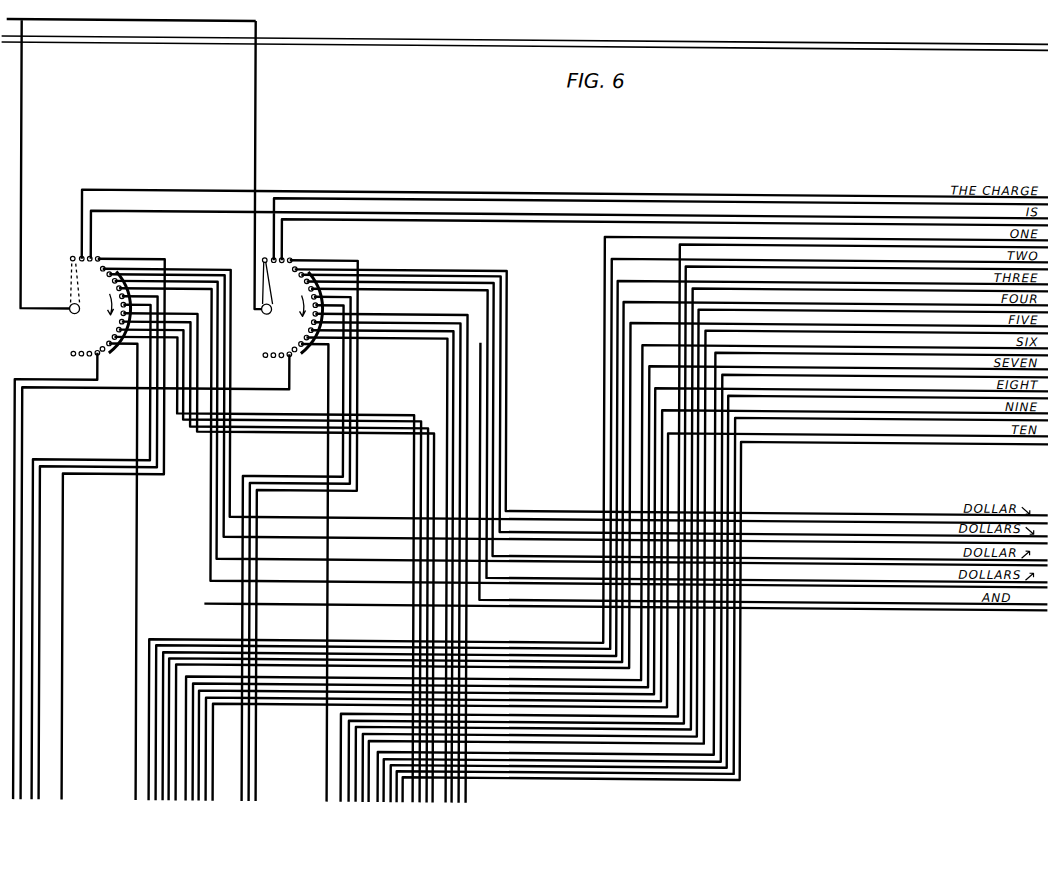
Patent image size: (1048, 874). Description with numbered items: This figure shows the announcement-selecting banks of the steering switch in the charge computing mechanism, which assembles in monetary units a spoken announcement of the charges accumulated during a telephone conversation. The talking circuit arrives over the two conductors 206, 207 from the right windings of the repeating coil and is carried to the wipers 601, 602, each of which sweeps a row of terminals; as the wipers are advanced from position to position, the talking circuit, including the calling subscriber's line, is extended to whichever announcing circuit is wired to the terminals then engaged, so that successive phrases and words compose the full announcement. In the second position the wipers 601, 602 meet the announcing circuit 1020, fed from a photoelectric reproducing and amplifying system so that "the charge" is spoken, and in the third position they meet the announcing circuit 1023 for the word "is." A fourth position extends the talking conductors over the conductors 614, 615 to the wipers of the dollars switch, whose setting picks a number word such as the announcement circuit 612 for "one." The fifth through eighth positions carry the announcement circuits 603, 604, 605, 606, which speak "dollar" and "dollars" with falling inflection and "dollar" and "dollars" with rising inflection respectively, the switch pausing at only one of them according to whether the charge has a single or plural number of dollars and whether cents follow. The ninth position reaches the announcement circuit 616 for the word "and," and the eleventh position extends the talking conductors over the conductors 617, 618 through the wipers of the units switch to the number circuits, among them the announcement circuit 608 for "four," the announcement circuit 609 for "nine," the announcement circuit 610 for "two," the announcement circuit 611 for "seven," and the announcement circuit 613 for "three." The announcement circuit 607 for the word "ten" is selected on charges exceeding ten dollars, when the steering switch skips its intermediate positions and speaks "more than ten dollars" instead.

The conductor 207 is at (21, 100).
The conductor 206 is at (255, 99).
The wiper 602 is at (72, 286).
The wiper 601 is at (275, 314).
The announcing circuit 1020 is at (578, 193).
The announcing circuit 1023 is at (545, 221).
The announcement circuit 612 is at (737, 244).
The announcement circuit 610 is at (797, 261).
The announcement circuit 613 is at (835, 287).
The announcement circuit 608 is at (870, 308).
The announcement circuit 611 is at (797, 371).
The announcement circuit 609 is at (853, 414).
The announcement circuit 607 is at (917, 430).
The announcement circuit 603 is at (765, 517).
The announcement circuit 604 is at (815, 540).
The announcement circuit 605 is at (867, 560).
The announcement circuit 606 is at (918, 584).
The announcement circuit 616 is at (817, 603).
The conductor 614 is at (359, 361).
The conductor 617 is at (357, 388).
The conductor 618 is at (113, 464).
The conductor 615 is at (166, 461).